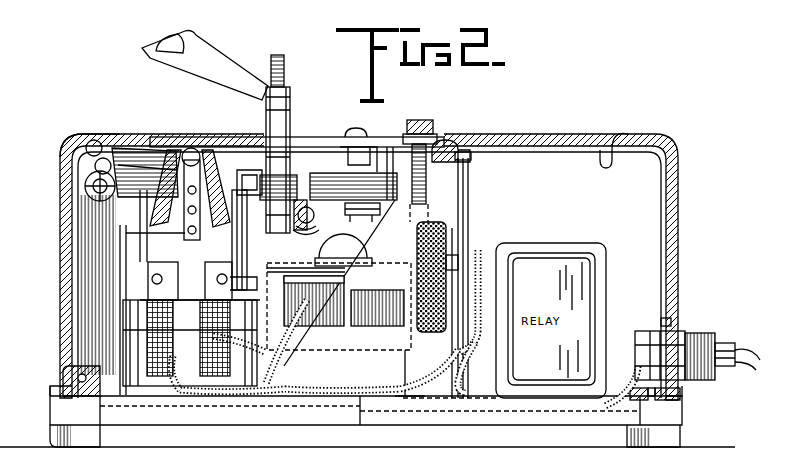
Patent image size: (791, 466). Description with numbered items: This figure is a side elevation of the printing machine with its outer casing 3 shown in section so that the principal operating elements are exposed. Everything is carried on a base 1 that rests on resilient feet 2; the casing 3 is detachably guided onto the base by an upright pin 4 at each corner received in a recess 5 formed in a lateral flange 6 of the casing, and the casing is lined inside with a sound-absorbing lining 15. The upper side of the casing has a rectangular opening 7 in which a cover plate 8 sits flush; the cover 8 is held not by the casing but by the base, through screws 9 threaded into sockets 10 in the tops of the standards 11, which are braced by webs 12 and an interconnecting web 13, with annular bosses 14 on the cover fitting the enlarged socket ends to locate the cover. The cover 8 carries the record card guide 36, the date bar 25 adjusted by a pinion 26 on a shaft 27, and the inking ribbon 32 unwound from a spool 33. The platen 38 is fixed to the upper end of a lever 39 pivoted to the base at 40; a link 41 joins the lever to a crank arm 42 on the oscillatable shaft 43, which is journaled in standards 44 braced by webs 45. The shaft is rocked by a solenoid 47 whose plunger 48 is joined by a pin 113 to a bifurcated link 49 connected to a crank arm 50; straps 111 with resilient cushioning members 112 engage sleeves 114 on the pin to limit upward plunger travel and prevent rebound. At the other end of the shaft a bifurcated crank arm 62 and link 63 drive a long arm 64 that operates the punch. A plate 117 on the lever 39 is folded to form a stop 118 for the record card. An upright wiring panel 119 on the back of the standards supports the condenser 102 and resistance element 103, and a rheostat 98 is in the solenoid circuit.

The base 1 is at (482, 424).
The resilient feet 2 is at (90, 439).
The outer casing 3 is at (677, 215).
The upright pin 4 is at (65, 399).
The recess 5 is at (88, 372).
The lateral flange 6 is at (636, 392).
The rectangular opening 7 is at (470, 150).
The cover plate 8 is at (305, 140).
The screw 9 is at (420, 120).
The threaded socket 10 is at (422, 176).
The standard 11 is at (528, 151).
The web 12 is at (373, 371).
The interconnecting web 13 is at (448, 356).
The annular boss 14 is at (445, 146).
The sound-absorbing lining 15 is at (37, 311).
The date bar 25 is at (287, 92).
The pinion 26 is at (348, 218).
The shaft 27 is at (305, 207).
The inking ribbon 32 is at (328, 178).
The ribbon spool 33 is at (375, 165).
The record card guide 36 is at (198, 58).
The platen 38 is at (264, 143).
The lever 39 is at (242, 238).
The pivot 40 is at (238, 402).
The link 41 is at (124, 160).
The crank arm 42 is at (95, 172).
The oscillatable shaft 43 is at (85, 190).
The standard 44 is at (88, 278).
The web 45 is at (163, 247).
The solenoid 47 is at (160, 351).
The plunger 48 is at (182, 232).
The bifurcated link 49 is at (181, 150).
The crank arm 50 is at (123, 173).
The bifurcated crank arm 62 is at (86, 148).
The link 63 is at (102, 148).
The long arm 64 is at (127, 248).
The rheostat 98 is at (364, 326).
The condenser 102 is at (486, 283).
The resistance element 103 is at (418, 250).
The strap 111 is at (137, 233).
The resilient cushioning member 112 is at (207, 160).
The pin 113 is at (177, 157).
The sleeve 114 is at (255, 212).
The plate 117 is at (290, 286).
The stop 118 is at (266, 265).
The wiring panel 119 is at (466, 205).